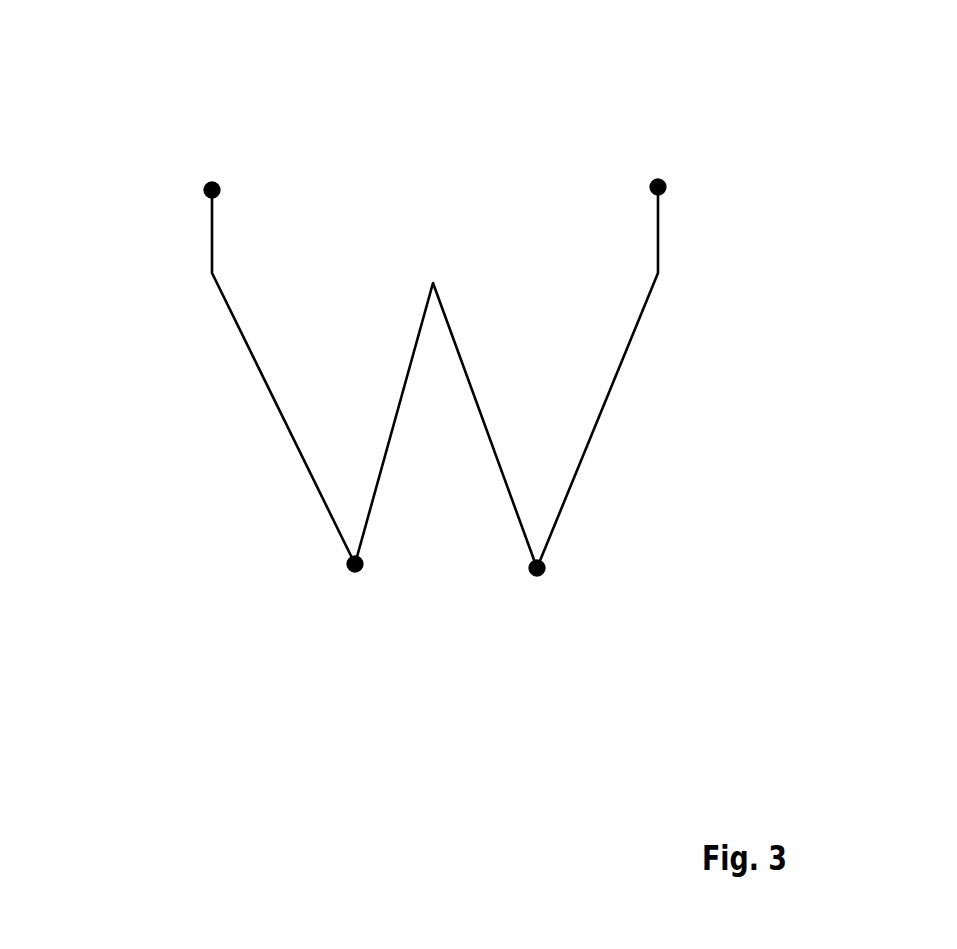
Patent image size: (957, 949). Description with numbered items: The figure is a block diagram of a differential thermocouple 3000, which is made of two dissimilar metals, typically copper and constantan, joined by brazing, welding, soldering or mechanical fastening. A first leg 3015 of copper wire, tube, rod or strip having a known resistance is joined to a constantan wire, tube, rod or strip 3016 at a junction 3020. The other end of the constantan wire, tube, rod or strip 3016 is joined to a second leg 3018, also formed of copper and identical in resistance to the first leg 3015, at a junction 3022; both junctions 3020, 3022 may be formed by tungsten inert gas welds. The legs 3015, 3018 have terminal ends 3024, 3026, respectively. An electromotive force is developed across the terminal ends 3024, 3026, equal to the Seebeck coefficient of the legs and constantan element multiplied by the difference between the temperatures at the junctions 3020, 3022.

The differential thermocouple 3000 is at (282, 173).
The first leg 3015 is at (239, 422).
The constantan wire, tube, rod or strip 3016 is at (489, 357).
The second leg 3018 is at (631, 419).
The junction 3020 is at (356, 607).
The junction 3022 is at (539, 612).
The terminal end 3024 is at (171, 232).
The terminal end 3026 is at (700, 204).